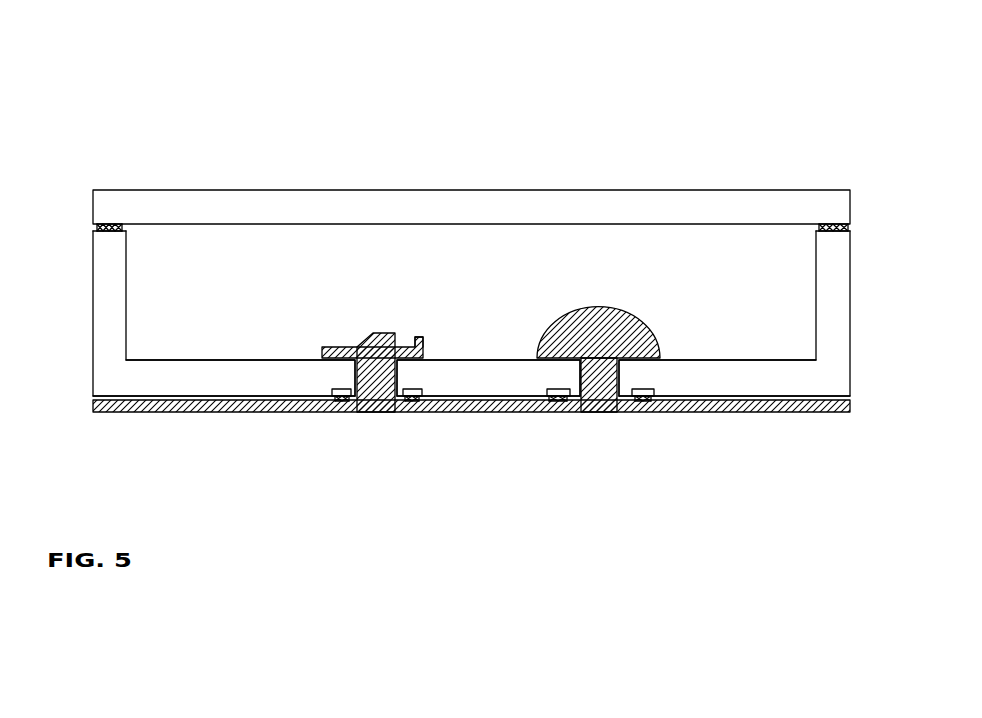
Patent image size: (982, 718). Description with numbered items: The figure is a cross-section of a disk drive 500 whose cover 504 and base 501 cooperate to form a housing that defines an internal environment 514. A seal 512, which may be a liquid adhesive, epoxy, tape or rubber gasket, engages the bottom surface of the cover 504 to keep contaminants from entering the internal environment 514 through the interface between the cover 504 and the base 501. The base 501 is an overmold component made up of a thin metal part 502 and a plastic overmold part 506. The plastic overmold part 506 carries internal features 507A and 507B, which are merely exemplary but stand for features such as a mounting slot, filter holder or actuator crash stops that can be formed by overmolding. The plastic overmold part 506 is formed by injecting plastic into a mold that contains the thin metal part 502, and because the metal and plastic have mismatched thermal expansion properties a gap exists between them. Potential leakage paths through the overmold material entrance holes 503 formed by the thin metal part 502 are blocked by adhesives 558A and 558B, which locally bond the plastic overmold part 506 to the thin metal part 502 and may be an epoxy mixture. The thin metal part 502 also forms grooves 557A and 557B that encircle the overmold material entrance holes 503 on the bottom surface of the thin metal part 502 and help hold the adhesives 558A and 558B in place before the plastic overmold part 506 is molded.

The disk drive 500 is at (133, 85).
The base 501 is at (80, 381).
The thin metal part 502 is at (215, 391).
The overmold material entrance holes 503 is at (560, 371).
The cover 504 is at (496, 219).
The plastic overmold part 506 is at (207, 413).
The internal feature 507A is at (418, 337).
The internal feature 507B is at (623, 308).
The seal 512 is at (97, 227).
The internal environment 514 is at (187, 268).
The groove 557A is at (411, 389).
The groove 557B is at (558, 389).
The adhesive 558A is at (411, 401).
The adhesive 558B is at (643, 401).